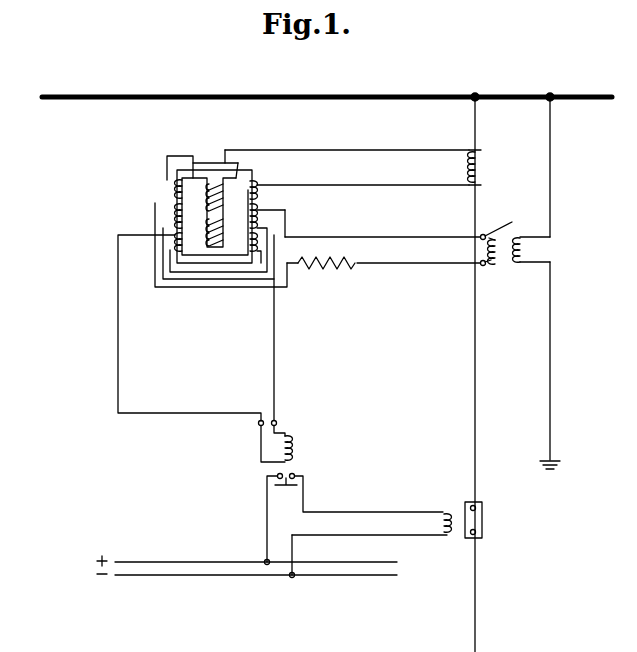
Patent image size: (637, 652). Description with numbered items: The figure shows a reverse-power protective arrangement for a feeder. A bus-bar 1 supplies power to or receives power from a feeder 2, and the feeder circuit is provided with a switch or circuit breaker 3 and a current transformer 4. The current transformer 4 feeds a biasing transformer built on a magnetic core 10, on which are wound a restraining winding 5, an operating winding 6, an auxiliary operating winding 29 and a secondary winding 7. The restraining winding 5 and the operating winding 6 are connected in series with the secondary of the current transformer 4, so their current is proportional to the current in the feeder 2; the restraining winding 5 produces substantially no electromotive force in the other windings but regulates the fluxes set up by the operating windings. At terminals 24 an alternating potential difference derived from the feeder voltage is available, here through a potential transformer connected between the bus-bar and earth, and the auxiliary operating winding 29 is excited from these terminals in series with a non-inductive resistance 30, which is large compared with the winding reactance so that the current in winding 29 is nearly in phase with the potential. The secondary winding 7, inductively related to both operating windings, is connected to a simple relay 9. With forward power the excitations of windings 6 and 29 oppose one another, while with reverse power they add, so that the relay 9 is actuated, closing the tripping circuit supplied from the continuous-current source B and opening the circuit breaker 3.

The bus-bar 1 is at (283, 95).
The feeder 2 is at (477, 446).
The circuit breaker 3 is at (483, 519).
The current transformer 4 is at (483, 172).
The restraining winding 5 is at (222, 205).
The operating winding 6 is at (174, 185).
The secondary winding 7 is at (175, 245).
The relay 9 is at (291, 450).
The magnetic core 10 is at (252, 170).
The terminals 24 is at (516, 237).
The auxiliary operating winding 29 is at (174, 213).
The non-inductive resistance 30 is at (332, 270).
The battery relay coil B is at (445, 512).